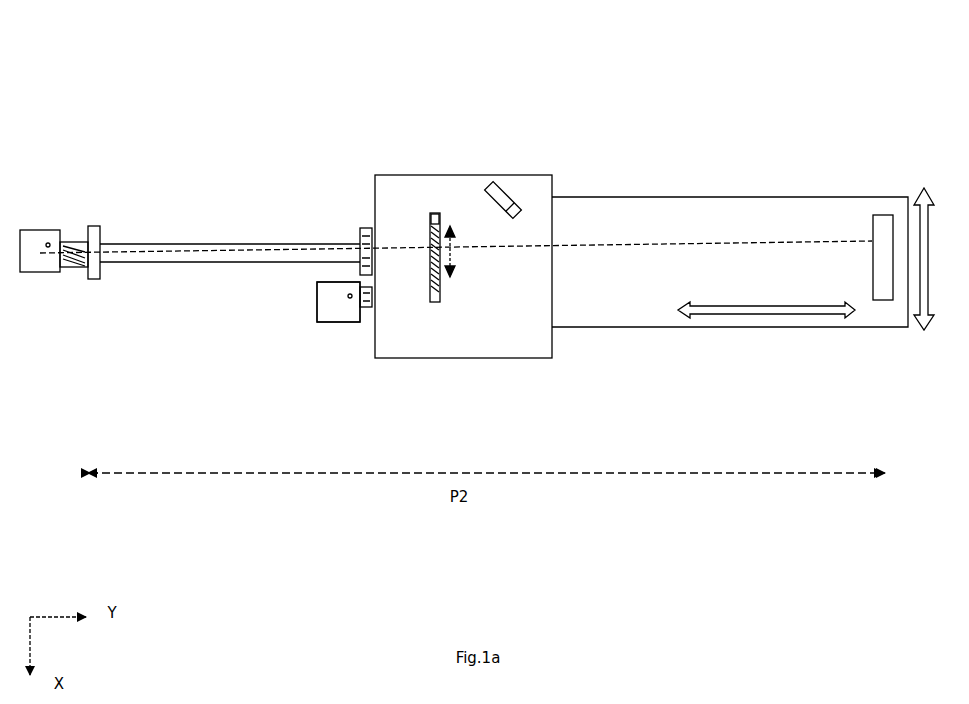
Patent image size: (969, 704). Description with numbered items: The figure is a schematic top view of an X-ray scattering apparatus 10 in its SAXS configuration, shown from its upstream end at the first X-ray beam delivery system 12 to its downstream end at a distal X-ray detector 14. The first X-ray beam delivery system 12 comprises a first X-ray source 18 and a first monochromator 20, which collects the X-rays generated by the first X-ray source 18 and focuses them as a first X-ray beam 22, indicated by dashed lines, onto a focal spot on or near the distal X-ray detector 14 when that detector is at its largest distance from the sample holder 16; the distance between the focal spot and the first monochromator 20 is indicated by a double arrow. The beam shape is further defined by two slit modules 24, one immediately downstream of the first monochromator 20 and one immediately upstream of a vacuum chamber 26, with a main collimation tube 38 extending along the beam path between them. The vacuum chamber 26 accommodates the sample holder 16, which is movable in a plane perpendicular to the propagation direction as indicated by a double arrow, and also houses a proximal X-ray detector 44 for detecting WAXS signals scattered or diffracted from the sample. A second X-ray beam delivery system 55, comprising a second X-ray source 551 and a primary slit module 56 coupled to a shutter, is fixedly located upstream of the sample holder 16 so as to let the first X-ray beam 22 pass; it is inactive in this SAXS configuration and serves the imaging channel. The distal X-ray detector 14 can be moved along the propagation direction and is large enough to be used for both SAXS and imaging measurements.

The X-ray scattering apparatus 10 is at (452, 115).
The first X-ray beam delivery system 12 is at (62, 203).
The distal X-ray detector 14 is at (880, 214).
The sample holder 16 is at (437, 302).
The first X-ray source 18 is at (43, 262).
The first monochromator 20 is at (72, 270).
The first X-ray beam 22 is at (632, 246).
The slit module 24 is at (100, 232).
The vacuum chamber 26 is at (388, 360).
The main collimation tube 38 is at (182, 263).
The proximal X-ray detector 44 is at (517, 193).
The second X-ray beam delivery system 55 is at (312, 307).
The second X-ray source 551 is at (325, 325).
The primary slit module 56 is at (365, 310).